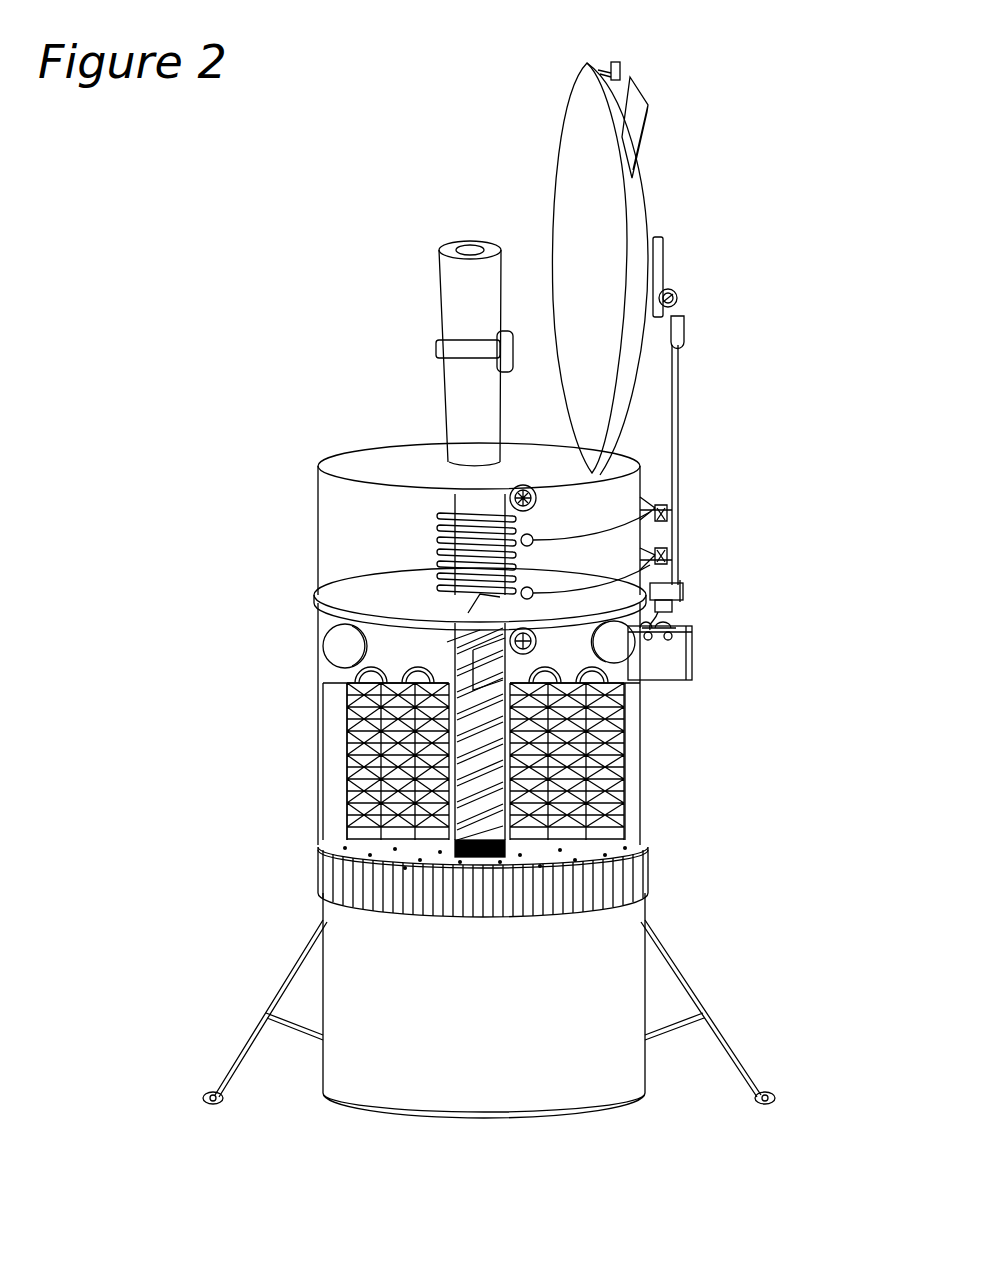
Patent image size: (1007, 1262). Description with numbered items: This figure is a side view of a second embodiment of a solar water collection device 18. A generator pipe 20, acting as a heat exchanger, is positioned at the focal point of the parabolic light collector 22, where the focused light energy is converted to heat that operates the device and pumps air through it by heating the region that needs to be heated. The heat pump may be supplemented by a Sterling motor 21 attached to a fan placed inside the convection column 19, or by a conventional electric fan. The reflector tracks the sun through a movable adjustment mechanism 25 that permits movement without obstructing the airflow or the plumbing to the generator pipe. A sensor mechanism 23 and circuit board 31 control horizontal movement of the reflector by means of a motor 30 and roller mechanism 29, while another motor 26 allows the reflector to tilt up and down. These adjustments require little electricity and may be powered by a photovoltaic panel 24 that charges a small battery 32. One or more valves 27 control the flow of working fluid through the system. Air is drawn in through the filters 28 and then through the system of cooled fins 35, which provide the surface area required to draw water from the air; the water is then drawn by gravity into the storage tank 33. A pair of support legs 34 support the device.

The solar water collection device 18 is at (290, 355).
The convection column 19 is at (465, 246).
The generator pipe 20 is at (440, 290).
The Sterling motor 21 is at (436, 360).
The parabolic light collector 22 is at (575, 113).
The sensor mechanism 23 is at (620, 64).
The photovoltaic panel 24 is at (640, 115).
The movable adjustment mechanism 25 is at (680, 292).
The motor 26 is at (688, 322).
The valves 27 is at (536, 494).
The filters 28 is at (328, 648).
The roller mechanism 29 is at (672, 518).
The motor 30 is at (690, 600).
The circuit board 31 is at (676, 643).
The battery 32 is at (683, 665).
The storage tank 33 is at (352, 948).
The support legs 34 is at (722, 1040).
The cooled fins 35 is at (600, 778).